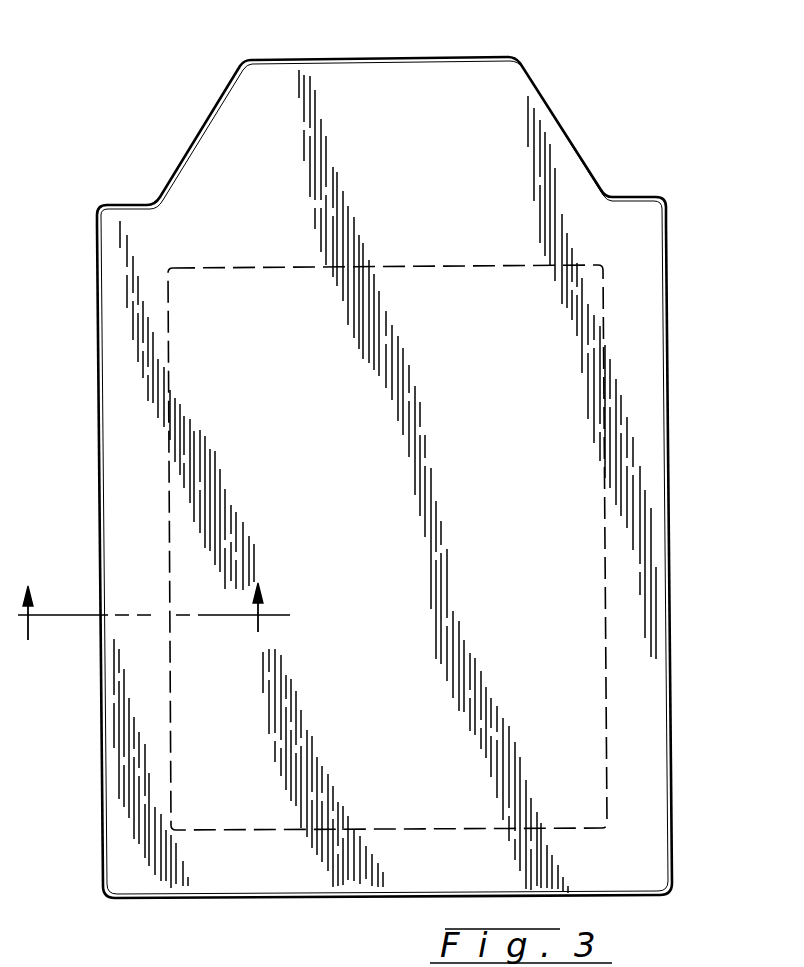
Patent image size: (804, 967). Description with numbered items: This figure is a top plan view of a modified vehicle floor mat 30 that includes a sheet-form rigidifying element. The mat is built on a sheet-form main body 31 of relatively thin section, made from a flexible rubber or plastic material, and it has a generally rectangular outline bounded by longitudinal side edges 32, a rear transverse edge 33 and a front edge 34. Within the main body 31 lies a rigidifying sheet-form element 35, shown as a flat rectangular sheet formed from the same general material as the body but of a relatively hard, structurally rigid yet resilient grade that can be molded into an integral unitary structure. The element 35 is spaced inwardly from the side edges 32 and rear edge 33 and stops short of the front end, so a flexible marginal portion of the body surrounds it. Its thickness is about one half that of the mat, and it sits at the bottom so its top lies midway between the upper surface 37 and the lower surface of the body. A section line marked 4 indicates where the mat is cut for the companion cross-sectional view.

The vehicle floor mat 30 is at (373, 472).
The sheet-form main body 31 is at (117, 425).
The longitudinal side edges 32 is at (97, 315).
The rear transverse edge 33 is at (255, 898).
The front edge 34 is at (440, 57).
The rigidifying sheet-form element 35 is at (602, 538).
The upper surface 37 is at (390, 450).
The section line 4- 4 is at (154, 611).